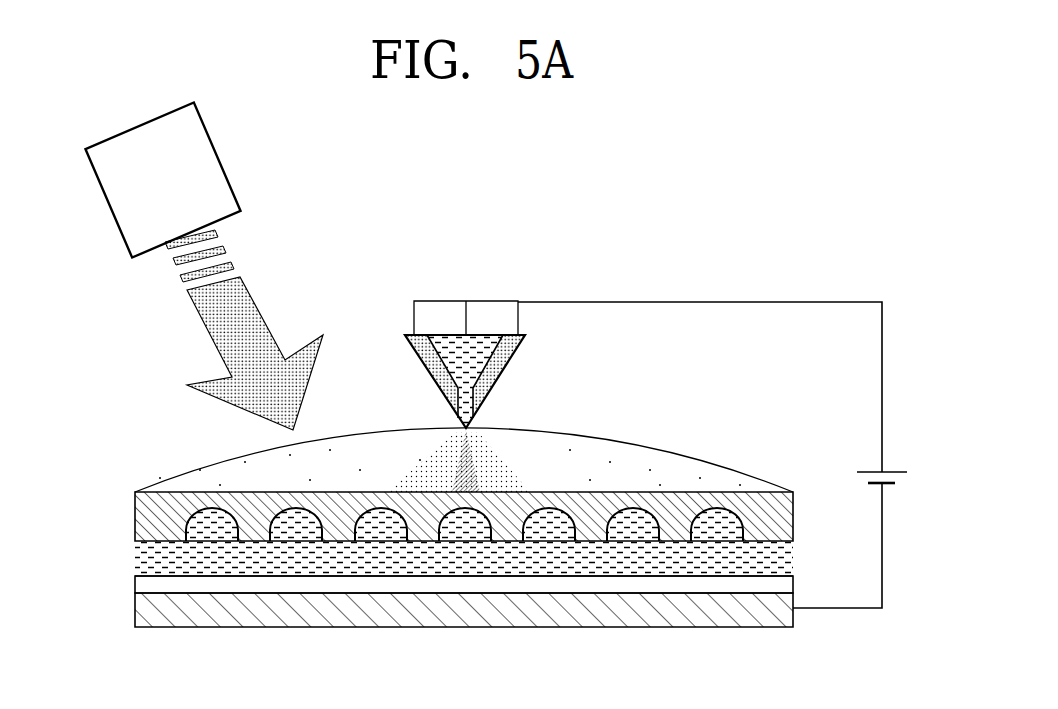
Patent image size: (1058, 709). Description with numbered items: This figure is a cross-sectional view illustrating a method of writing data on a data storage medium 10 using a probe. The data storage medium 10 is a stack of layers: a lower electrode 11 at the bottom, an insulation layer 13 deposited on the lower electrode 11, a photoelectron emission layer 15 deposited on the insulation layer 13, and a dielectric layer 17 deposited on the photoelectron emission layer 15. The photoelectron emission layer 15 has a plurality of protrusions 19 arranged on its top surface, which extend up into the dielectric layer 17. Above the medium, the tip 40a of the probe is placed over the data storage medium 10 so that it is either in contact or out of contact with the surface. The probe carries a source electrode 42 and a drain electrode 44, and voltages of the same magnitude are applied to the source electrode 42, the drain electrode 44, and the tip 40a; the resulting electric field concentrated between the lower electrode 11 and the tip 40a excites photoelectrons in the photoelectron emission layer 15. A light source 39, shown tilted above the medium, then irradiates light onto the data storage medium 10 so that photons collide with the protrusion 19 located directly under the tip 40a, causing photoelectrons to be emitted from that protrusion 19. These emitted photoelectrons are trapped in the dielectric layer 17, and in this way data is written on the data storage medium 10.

The data storage medium 10 is at (426, 509).
The lower electrode 11 is at (135, 612).
The insulation layer 13 is at (135, 585).
The photoelectron emission layer 15 is at (426, 500).
The dielectric layer 17 is at (135, 522).
The protrusions 19 is at (213, 508).
The light source 39 is at (220, 153).
The tip 40a is at (616, 451).
The source electrode 42 is at (431, 378).
The drain electrode 44 is at (502, 378).